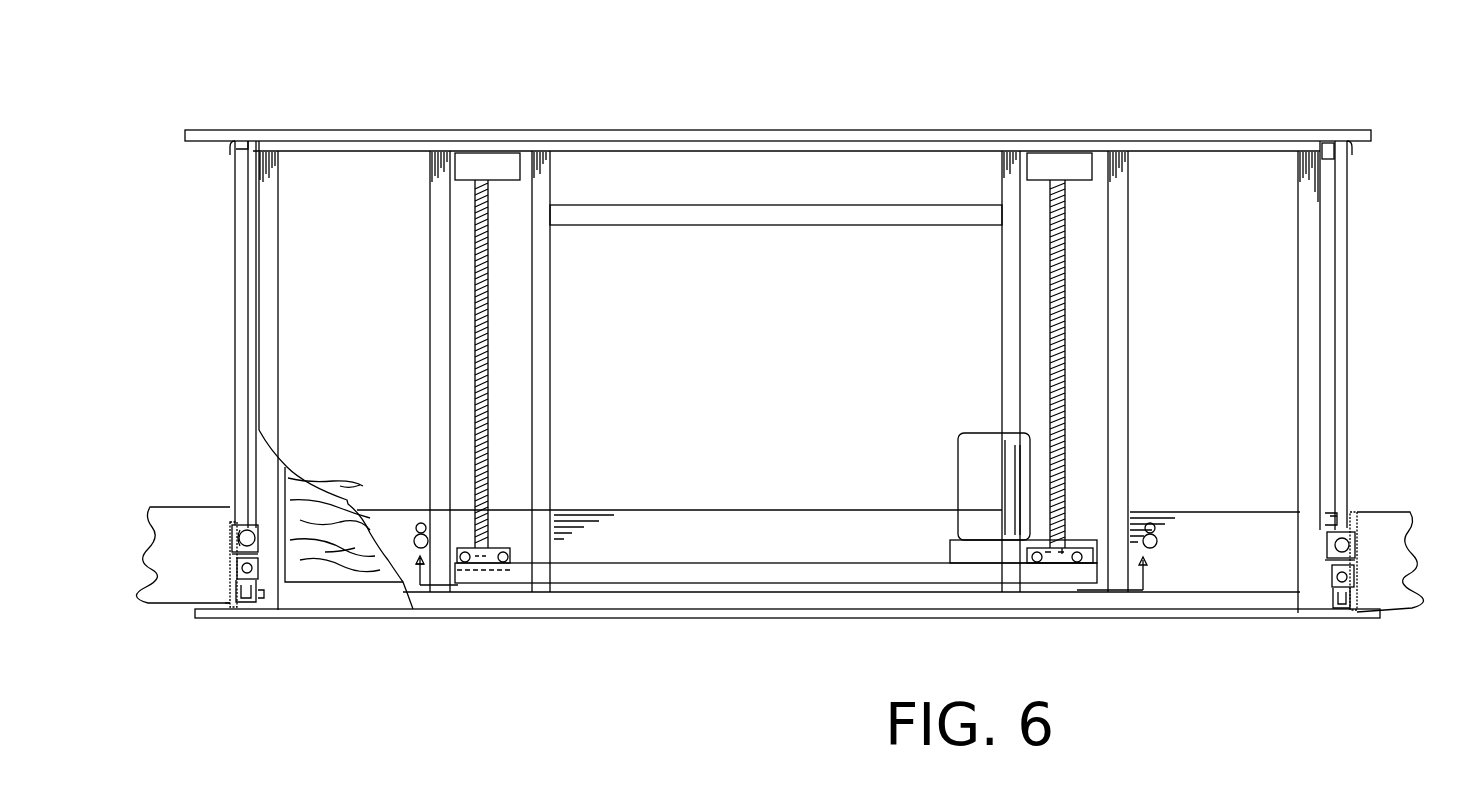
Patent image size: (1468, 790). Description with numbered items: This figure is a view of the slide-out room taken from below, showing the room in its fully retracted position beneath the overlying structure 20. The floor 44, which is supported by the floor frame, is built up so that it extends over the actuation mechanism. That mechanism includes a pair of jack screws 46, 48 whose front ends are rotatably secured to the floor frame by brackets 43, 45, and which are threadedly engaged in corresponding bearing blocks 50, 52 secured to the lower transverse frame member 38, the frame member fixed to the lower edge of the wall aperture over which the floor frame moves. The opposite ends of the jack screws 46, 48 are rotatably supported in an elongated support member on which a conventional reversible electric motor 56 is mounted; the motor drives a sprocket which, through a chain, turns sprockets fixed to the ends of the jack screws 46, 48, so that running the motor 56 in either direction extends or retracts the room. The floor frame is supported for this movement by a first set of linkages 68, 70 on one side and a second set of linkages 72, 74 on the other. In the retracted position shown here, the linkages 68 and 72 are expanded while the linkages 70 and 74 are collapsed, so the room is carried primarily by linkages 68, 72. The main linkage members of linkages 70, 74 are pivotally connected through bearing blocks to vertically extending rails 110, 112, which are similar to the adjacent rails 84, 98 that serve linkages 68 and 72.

The top plate 20 is at (725, 130).
The lower transverse frame member 38 is at (752, 525).
The bracket 43 is at (480, 158).
The floor 44 is at (313, 483).
The bracket 45 is at (1050, 158).
The jack screw 46 is at (485, 385).
The jack screw 48 is at (1057, 368).
The bearing block 50 is at (505, 553).
The bearing block 52 is at (1078, 552).
The reversible electric motor 56 is at (975, 468).
The linkage 68 is at (235, 303).
The linkage 70 is at (259, 583).
The linkage 72 is at (1349, 388).
The linkage 74 is at (1345, 596).
The rail 84 is at (247, 578).
The rail 98 is at (1348, 540).
The rail 110 is at (243, 533).
The rail 112 is at (1350, 572).